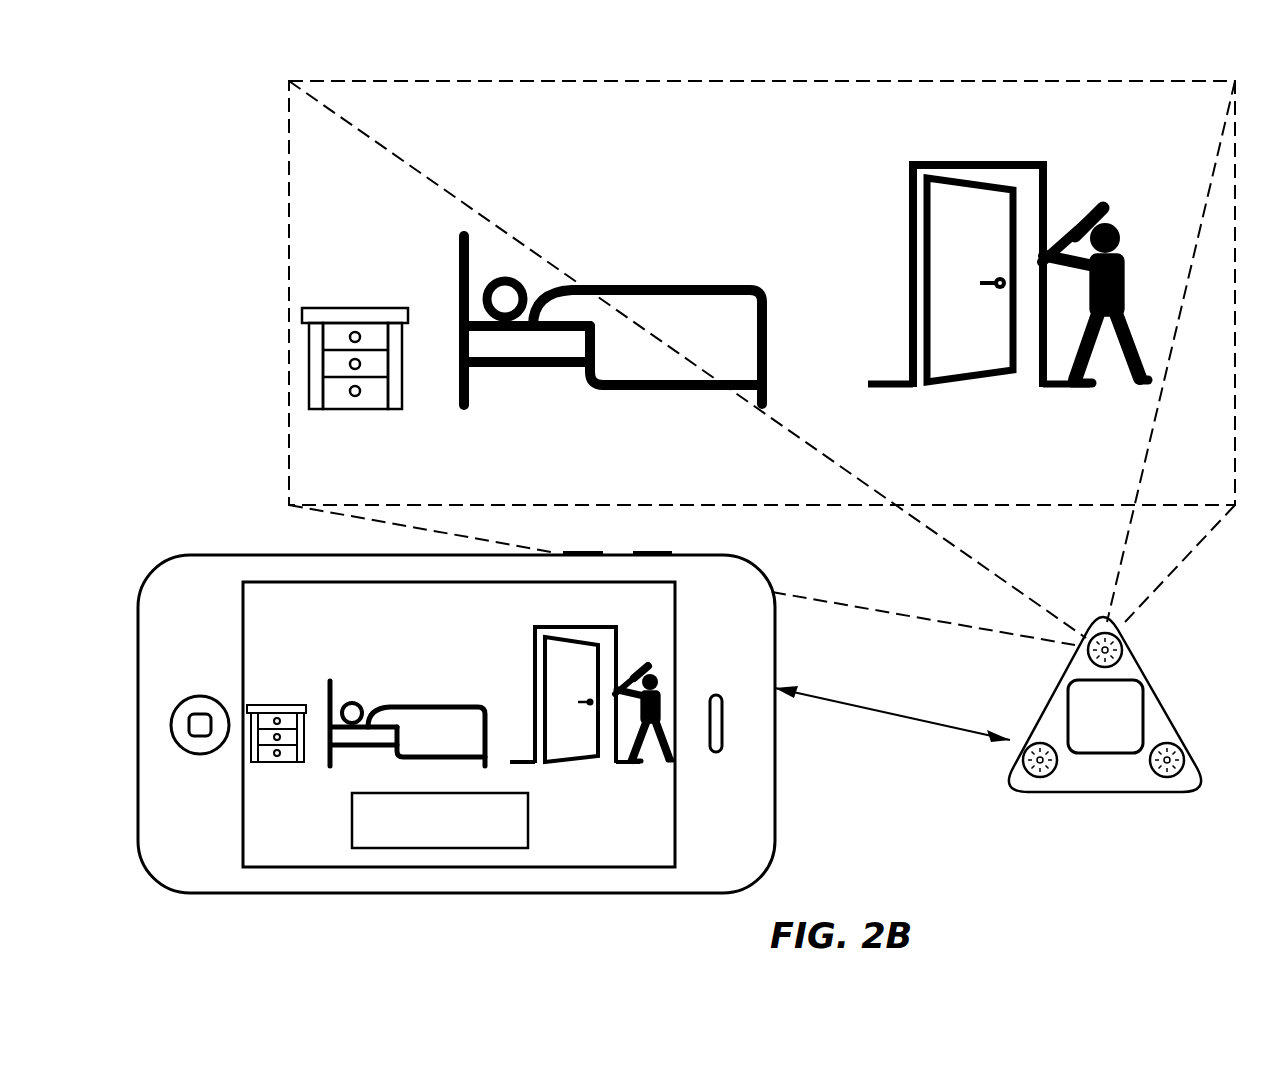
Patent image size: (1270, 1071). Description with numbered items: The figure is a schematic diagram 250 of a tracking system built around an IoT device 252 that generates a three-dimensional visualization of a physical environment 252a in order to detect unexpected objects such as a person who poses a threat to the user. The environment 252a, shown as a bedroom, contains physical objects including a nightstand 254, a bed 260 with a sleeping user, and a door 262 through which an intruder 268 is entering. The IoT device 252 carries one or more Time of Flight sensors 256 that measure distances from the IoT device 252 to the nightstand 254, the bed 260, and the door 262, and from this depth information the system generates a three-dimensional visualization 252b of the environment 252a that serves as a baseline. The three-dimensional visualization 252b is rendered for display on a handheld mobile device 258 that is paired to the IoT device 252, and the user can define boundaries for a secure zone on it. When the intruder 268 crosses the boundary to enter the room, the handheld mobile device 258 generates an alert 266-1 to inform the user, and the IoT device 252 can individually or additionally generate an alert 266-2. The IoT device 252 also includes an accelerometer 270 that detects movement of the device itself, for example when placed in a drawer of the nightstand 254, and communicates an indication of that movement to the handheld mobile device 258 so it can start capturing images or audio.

The schematic diagram 250 is at (166, 102).
The physical environment 252a is at (742, 273).
The 3D visualization 252b is at (460, 690).
The IoT device 252 is at (1106, 798).
The nightstand 254 is at (376, 309).
The Time of Flight (ToF) sensors 256 is at (1127, 647).
The handheld mobile device 258 is at (188, 557).
The bed 260 is at (751, 287).
The door 262 is at (950, 385).
The alert 266-1 is at (428, 851).
The alert 266-2 is at (1105, 716).
The intruder 268 is at (1124, 286).
The accelerometer 270 is at (1188, 750).